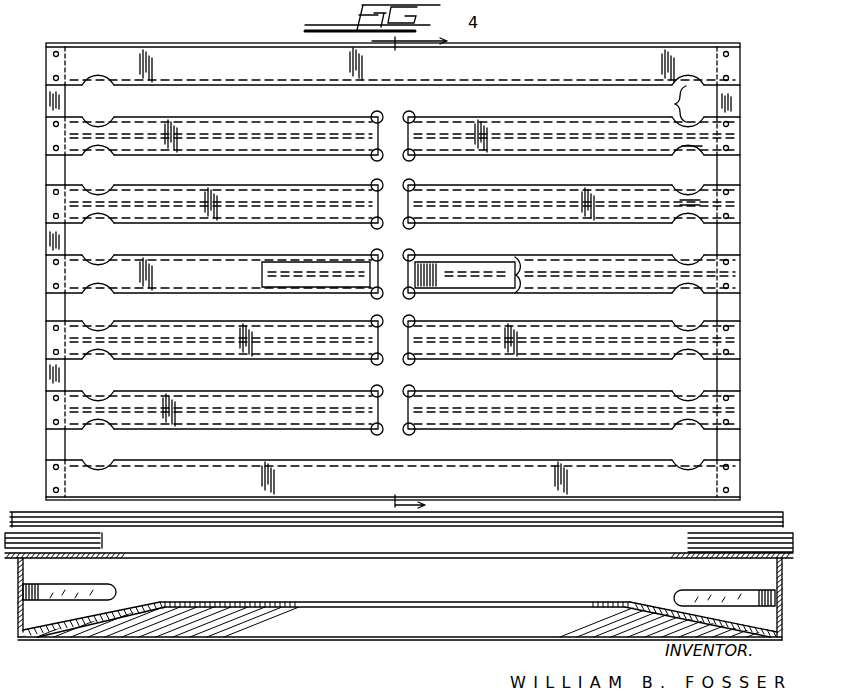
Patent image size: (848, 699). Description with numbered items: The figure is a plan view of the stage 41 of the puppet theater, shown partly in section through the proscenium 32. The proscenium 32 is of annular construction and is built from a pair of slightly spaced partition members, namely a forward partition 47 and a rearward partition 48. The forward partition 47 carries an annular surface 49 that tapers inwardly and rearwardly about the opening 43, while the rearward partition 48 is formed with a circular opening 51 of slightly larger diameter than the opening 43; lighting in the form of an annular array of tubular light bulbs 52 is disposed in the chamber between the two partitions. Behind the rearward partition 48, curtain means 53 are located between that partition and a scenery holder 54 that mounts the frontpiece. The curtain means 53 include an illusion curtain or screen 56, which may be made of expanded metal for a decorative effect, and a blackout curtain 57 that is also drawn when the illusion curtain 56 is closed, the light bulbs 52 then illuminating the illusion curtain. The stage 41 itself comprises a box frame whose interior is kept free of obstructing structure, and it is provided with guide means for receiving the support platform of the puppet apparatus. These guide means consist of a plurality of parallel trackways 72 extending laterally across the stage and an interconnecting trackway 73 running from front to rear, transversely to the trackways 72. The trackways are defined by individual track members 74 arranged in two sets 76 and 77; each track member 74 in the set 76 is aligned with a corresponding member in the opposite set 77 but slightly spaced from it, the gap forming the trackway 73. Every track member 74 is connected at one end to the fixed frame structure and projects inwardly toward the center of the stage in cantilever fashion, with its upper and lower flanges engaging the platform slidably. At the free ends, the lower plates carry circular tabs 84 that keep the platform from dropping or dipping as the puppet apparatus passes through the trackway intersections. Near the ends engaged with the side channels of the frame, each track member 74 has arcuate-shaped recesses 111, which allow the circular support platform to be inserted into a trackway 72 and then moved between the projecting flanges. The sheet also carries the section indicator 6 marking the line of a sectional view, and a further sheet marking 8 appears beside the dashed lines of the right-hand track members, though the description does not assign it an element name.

The section line 6- 6 is at (409, 273).
The stage 41 is at (750, 176).
The set of track members 77 is at (270, 104).
The set of track members 76 is at (606, 104).
The track member 74 is at (442, 134).
The arcuate-shaped recess 111 is at (117, 240).
The stitching lines 8 is at (574, 176).
The trackway 72 is at (320, 247).
The interconnecting trackway 73 is at (405, 280).
The circular tab 84 is at (406, 434).
The scenery holder 54 is at (760, 512).
The illusion curtain 56 is at (396, 536).
The blackout curtain 57 is at (102, 532).
The curtain means 53 is at (685, 531).
The rearward partition 48 is at (82, 557).
The circular opening 51 is at (141, 559).
The proscenium 32 is at (223, 646).
The forward partition 47 is at (67, 638).
The opening 43 is at (442, 607).
The annular surface 49 is at (393, 622).
The light bulbs 52 is at (75, 599).